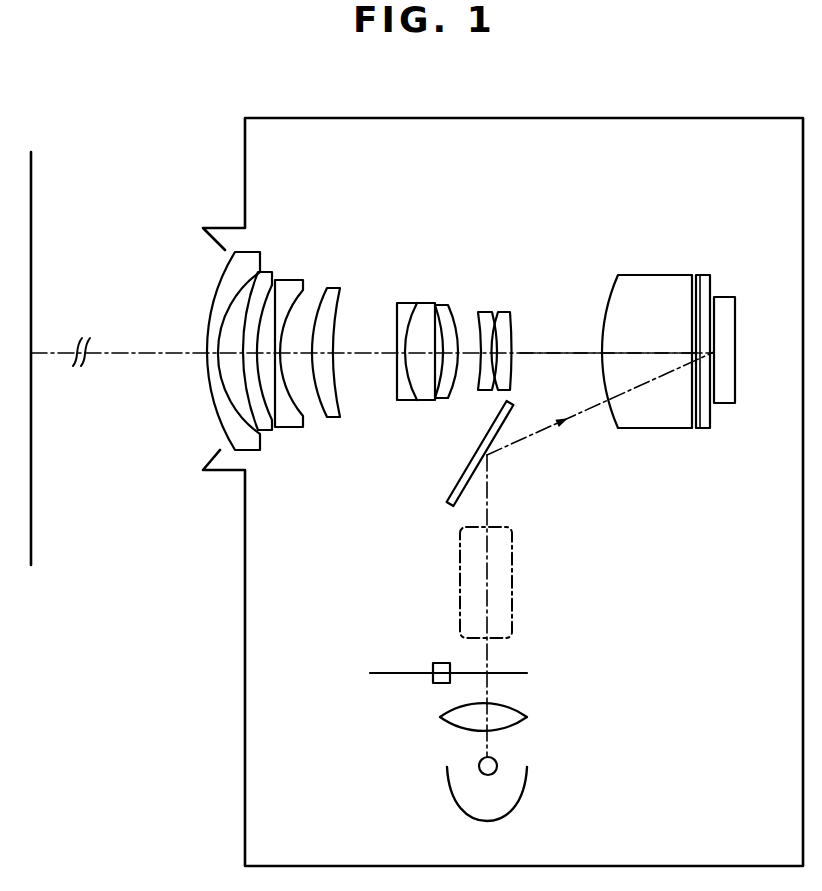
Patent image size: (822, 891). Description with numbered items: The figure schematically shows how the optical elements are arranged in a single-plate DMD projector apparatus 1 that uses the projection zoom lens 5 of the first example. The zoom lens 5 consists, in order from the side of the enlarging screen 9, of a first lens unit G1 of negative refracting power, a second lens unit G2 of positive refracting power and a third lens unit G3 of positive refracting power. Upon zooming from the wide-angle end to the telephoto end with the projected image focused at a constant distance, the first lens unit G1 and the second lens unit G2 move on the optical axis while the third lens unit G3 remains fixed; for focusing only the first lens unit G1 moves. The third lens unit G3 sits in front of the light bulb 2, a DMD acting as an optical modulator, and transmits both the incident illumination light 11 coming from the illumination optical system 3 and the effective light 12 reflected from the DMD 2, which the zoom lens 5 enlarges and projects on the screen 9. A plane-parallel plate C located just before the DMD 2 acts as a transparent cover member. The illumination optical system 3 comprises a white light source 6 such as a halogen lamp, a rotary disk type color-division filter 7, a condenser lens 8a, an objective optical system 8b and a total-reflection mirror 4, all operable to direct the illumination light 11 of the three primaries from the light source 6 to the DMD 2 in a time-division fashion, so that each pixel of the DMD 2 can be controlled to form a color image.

The projector apparatus 1 is at (232, 682).
The enlarging screen 9 is at (31, 233).
The projection zoom lens 5 is at (706, 172).
The first lens unit G1 is at (288, 249).
The second lens unit G2 is at (445, 272).
The third lens unit G3 is at (660, 250).
The plane-parallel plate C is at (703, 274).
The light bulb (DMD) 2 is at (735, 352).
The light ray (projection light) 12 is at (550, 351).
The total-reflection mirror 4 is at (452, 487).
The illumination light (incident light ray) 11 is at (507, 447).
The illumination optical system 3 is at (612, 445).
The objective optical system 8b is at (462, 578).
The rotary disk type color-division filter 7 is at (392, 672).
The condenser lens 8a is at (440, 717).
The white light source 6 is at (450, 793).